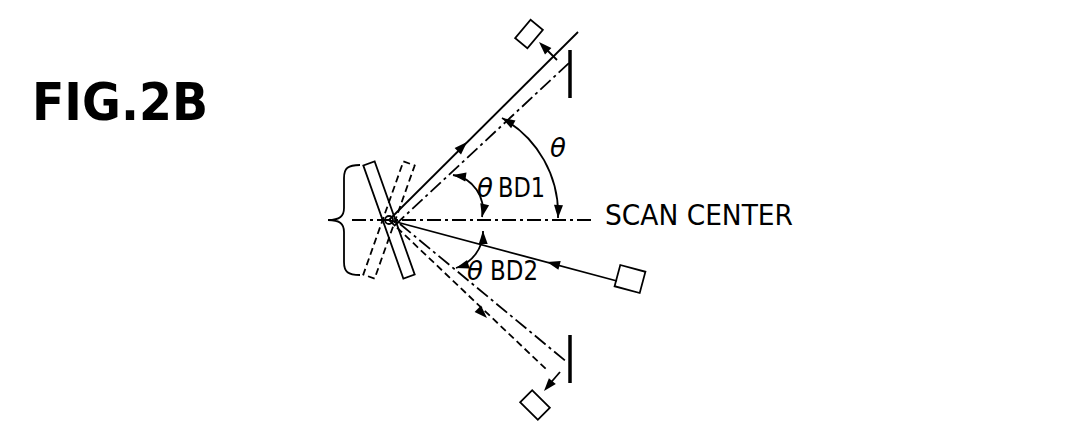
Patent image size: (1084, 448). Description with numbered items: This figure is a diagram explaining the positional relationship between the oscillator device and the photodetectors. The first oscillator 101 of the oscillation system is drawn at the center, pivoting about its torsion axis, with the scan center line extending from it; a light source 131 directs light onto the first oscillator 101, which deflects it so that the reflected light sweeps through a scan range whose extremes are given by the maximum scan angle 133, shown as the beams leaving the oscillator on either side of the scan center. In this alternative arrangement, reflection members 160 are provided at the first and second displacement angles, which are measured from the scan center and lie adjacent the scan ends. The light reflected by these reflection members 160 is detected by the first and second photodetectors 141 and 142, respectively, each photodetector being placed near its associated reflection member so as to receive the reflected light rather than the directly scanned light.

The first oscillator 101 is at (328, 220).
The light source 131 is at (645, 280).
The maximum scan angle 133 is at (495, 115).
The first photodetector 141 is at (540, 18).
The second photodetector 142 is at (549, 410).
The reflection member 160 is at (572, 68).